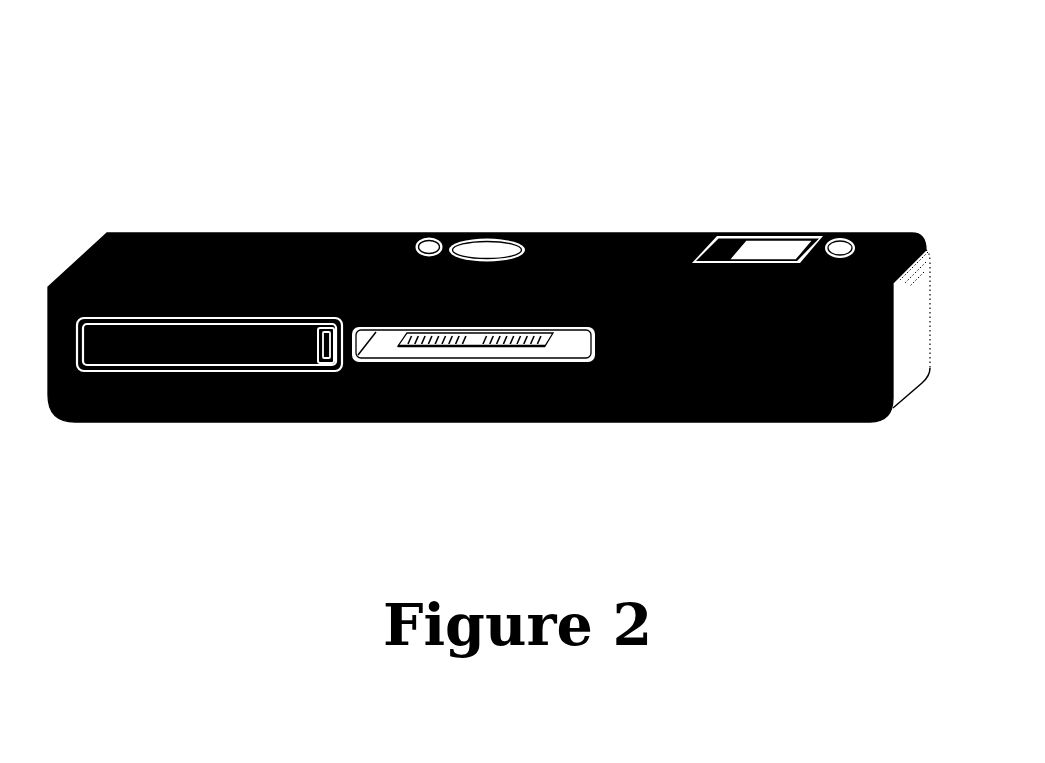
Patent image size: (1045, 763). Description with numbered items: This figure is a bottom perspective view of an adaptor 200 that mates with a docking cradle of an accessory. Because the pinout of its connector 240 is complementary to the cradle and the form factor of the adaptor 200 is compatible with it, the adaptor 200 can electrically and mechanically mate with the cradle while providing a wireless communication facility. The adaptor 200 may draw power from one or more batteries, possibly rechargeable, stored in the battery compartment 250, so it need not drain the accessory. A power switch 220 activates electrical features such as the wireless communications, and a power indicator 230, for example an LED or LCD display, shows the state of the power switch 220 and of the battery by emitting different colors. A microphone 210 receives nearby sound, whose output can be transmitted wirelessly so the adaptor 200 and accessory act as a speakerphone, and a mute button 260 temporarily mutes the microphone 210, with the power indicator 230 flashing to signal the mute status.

The adaptor 200 is at (225, 225).
The microphone 210 is at (491, 232).
The power switch 220 is at (732, 222).
The power indicator 230 is at (852, 223).
The connector 240 is at (378, 367).
The battery compartment 250 is at (230, 346).
The mute button 260 is at (442, 224).